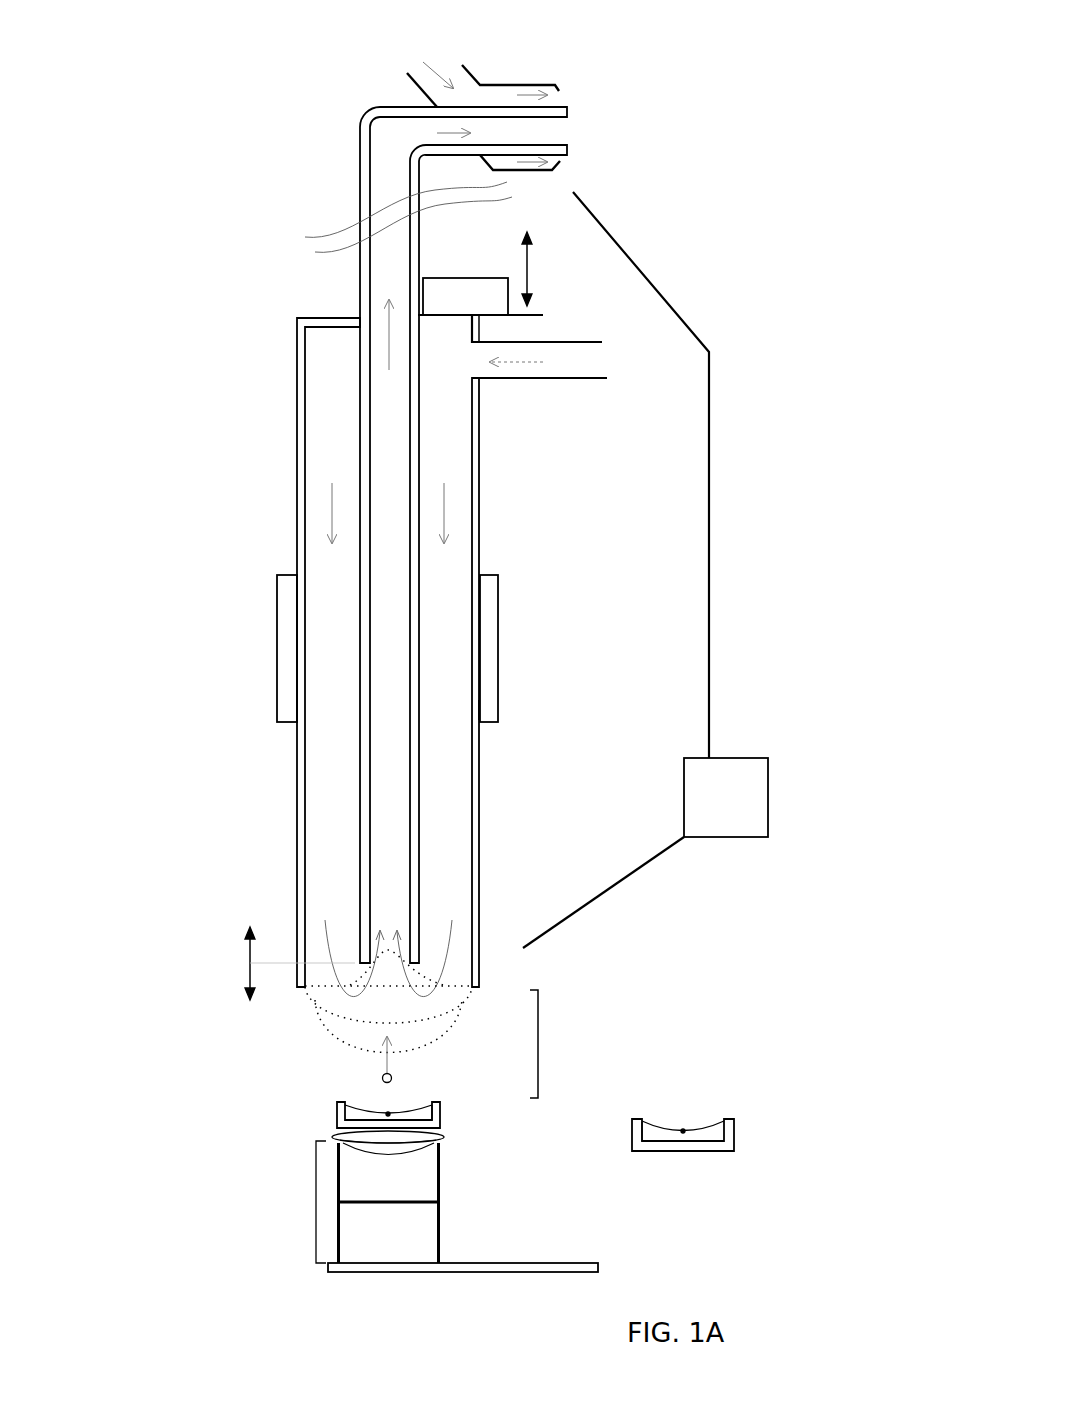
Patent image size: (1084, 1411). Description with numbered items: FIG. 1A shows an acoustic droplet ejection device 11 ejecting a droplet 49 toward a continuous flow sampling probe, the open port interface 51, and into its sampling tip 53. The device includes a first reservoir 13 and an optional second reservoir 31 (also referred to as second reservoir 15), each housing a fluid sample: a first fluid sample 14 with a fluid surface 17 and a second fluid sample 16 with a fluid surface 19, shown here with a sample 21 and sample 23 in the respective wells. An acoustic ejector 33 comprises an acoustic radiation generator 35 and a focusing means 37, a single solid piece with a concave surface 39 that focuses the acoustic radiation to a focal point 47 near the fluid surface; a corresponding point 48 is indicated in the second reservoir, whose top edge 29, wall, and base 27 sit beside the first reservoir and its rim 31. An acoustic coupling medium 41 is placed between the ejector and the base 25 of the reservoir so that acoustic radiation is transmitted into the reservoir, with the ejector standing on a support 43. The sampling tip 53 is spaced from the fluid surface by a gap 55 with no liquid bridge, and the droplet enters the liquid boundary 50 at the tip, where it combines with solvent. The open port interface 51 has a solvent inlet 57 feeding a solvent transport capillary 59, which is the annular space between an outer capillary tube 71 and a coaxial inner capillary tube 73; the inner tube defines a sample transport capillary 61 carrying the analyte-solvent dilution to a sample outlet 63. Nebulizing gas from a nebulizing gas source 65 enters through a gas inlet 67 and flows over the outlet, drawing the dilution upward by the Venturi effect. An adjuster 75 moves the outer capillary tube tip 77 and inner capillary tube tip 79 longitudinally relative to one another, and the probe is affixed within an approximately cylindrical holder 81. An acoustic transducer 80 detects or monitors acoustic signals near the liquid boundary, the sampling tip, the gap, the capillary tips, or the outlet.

The acoustic droplet ejection device 11 is at (272, 1167).
The first reservoir 13 is at (333, 1103).
The first fluid sample 14 is at (420, 1118).
The second reservoir 15 is at (737, 1133).
The second fluid sample 16 is at (653, 1132).
The fluid surface 17 is at (430, 1112).
The fluid surface 19 is at (718, 1123).
The sample surface 21 is at (353, 1114).
The second sample surface 23 is at (648, 1123).
The base 25 is at (347, 1136).
The second cup base 27 is at (655, 1153).
The cup top edge 29 is at (363, 1100).
The second reservoir 31 is at (640, 1115).
The acoustic ejector 33 is at (316, 1203).
The acoustic radiation generator 35 is at (440, 1242).
The focusing means 37 is at (440, 1187).
The concave surface 39 is at (430, 1153).
The acoustic coupling medium 41 is at (390, 1142).
The base plate 43 is at (328, 1267).
The focal point 47 is at (390, 1112).
The second sample center point 48 is at (685, 1130).
The droplet 49 is at (395, 1075).
The liquid boundary 50 is at (447, 1012).
The open port interface 51 is at (288, 532).
The sampling tip 53 is at (300, 1022).
The gap 55 is at (553, 1044).
The solvent inlet 57 is at (600, 362).
The solvent transport capillary 59 is at (460, 760).
The sample transport capillary 61 is at (398, 820).
The sample outlet 63 is at (536, 143).
The nebulizing gas source 65 is at (407, 58).
The gas inlet 67 is at (460, 88).
The outer capillary tube 71 is at (297, 842).
The inner capillary tube 73 is at (360, 917).
The adjuster 75 is at (477, 312).
The outer capillary tube tip 77 is at (480, 978).
The inner capillary tube tip 79 is at (418, 935).
The acoustic transducer 80 is at (645, 570).
The cylindrical holder 81 is at (487, 653).